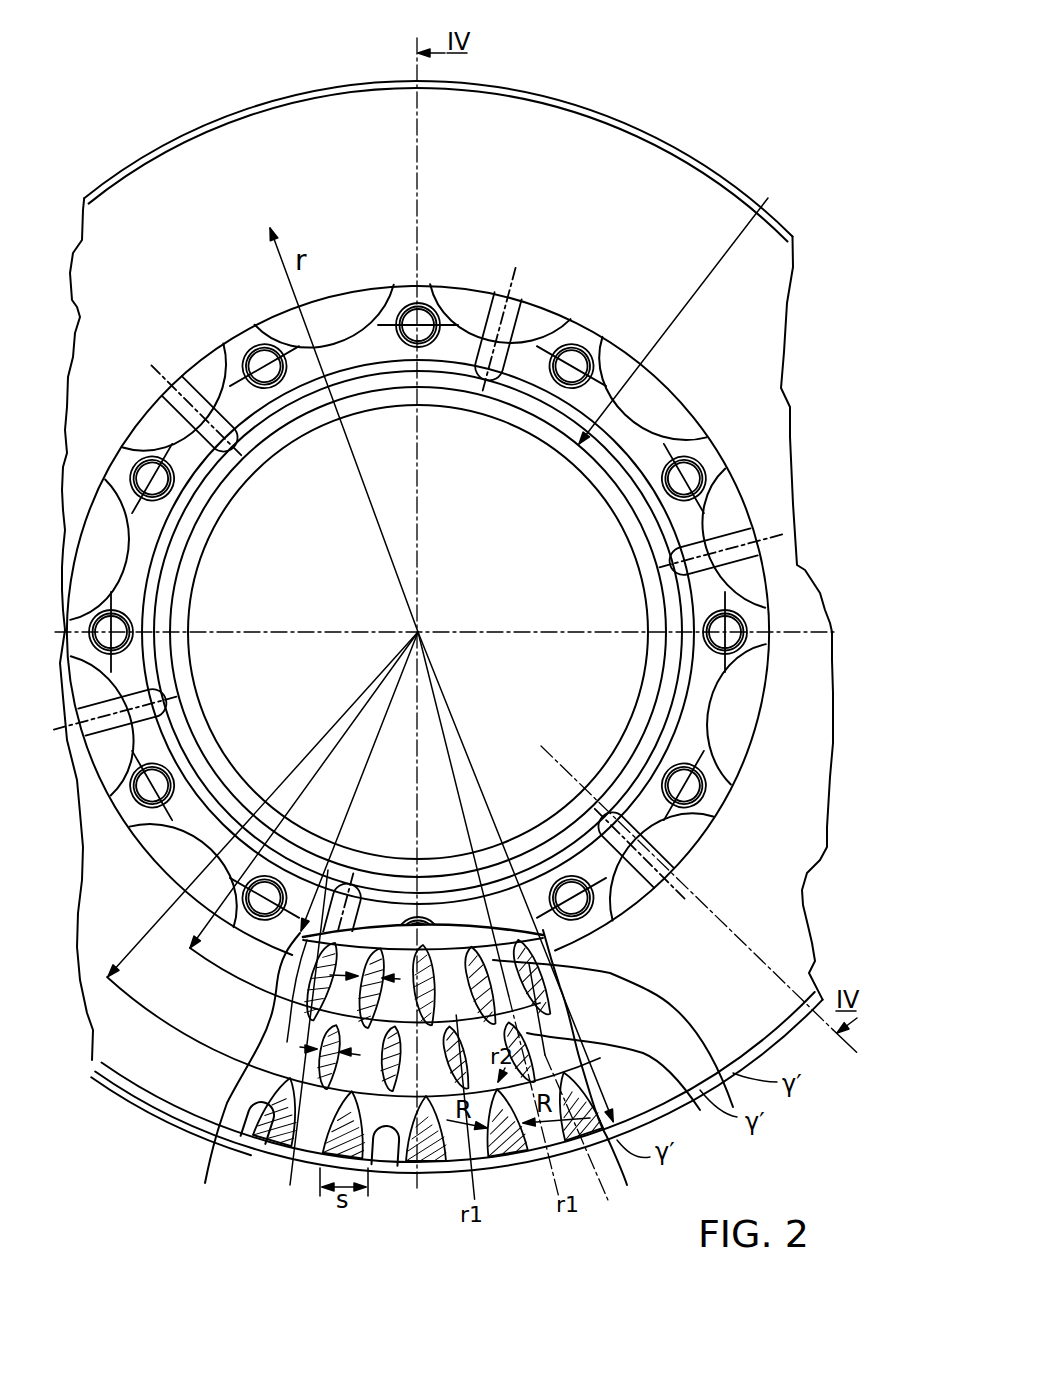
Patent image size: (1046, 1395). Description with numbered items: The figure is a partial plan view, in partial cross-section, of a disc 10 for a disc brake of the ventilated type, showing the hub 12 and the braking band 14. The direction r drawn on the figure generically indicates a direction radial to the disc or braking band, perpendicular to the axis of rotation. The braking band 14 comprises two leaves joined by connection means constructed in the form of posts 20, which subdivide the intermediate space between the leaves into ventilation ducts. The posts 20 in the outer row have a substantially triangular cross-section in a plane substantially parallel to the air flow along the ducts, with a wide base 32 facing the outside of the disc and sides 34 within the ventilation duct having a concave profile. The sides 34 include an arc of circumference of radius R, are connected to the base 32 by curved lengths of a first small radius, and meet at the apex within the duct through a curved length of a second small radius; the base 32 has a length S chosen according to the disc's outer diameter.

The disc for a disc brake 10 is at (608, 100).
The hub 12 is at (775, 212).
The braking band 14 is at (747, 1020).
The posts 20 is at (210, 1120).
The wide base 32 is at (600, 1140).
The sides 34 is at (262, 1125).